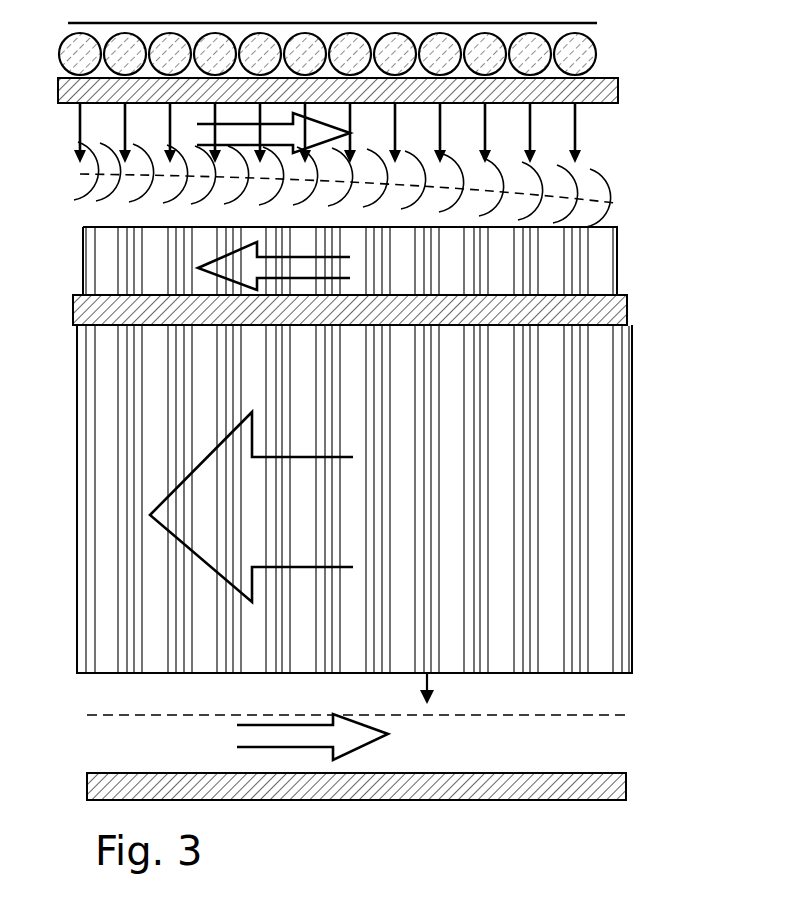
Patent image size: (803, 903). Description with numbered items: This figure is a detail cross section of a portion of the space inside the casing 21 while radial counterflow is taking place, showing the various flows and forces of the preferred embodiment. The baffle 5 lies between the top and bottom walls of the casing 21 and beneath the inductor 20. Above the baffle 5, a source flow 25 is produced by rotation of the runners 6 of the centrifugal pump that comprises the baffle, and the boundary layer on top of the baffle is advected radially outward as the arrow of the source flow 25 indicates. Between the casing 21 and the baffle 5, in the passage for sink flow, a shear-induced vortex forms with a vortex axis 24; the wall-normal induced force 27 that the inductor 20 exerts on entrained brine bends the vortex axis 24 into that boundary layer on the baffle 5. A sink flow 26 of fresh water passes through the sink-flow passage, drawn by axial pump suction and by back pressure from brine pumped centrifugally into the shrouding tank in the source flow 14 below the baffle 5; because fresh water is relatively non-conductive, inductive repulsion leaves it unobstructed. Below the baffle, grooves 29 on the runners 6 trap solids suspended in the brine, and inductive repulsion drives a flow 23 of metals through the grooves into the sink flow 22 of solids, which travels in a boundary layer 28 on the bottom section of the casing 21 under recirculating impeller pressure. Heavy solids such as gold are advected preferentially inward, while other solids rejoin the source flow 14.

The inductor 20 is at (614, 48).
The casing 21 is at (617, 92).
The wall-normal induced force 27 is at (578, 136).
The sink flow of fresh water 26 is at (197, 133).
The vortex axis 24 is at (78, 175).
The source flow 25 is at (198, 268).
The runners 6 is at (98, 435).
The grooves 29 is at (623, 578).
The baffle 5 is at (630, 305).
The source flow 14 is at (251, 507).
The boundary layer 28 is at (637, 716).
The sink flow of solids 22 is at (343, 745).
The flow of metals 23 is at (425, 697).